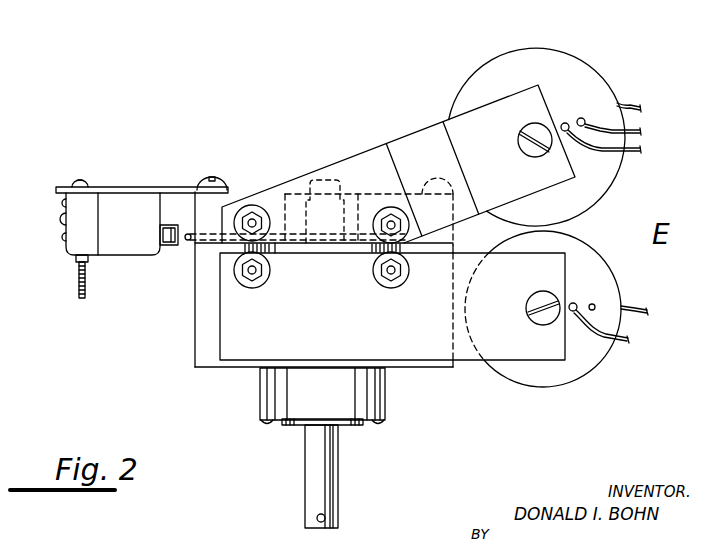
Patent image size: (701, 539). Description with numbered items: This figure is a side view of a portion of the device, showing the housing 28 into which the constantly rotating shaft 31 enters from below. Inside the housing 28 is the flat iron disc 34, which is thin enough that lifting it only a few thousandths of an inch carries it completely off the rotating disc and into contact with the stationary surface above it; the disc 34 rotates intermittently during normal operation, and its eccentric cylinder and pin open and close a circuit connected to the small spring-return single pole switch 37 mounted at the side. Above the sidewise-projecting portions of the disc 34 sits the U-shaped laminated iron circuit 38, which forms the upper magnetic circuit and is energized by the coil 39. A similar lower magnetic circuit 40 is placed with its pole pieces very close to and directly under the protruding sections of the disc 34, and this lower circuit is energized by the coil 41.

The housing 28 is at (210, 363).
The shaft 31 is at (332, 494).
The flat iron disc 34 is at (332, 248).
The single pole switch 37 is at (118, 210).
The U-shaped laminated iron circuit 38 is at (428, 122).
The coil 39 is at (570, 67).
The lower magnetic circuit 40 is at (486, 387).
The coil 41 is at (602, 285).